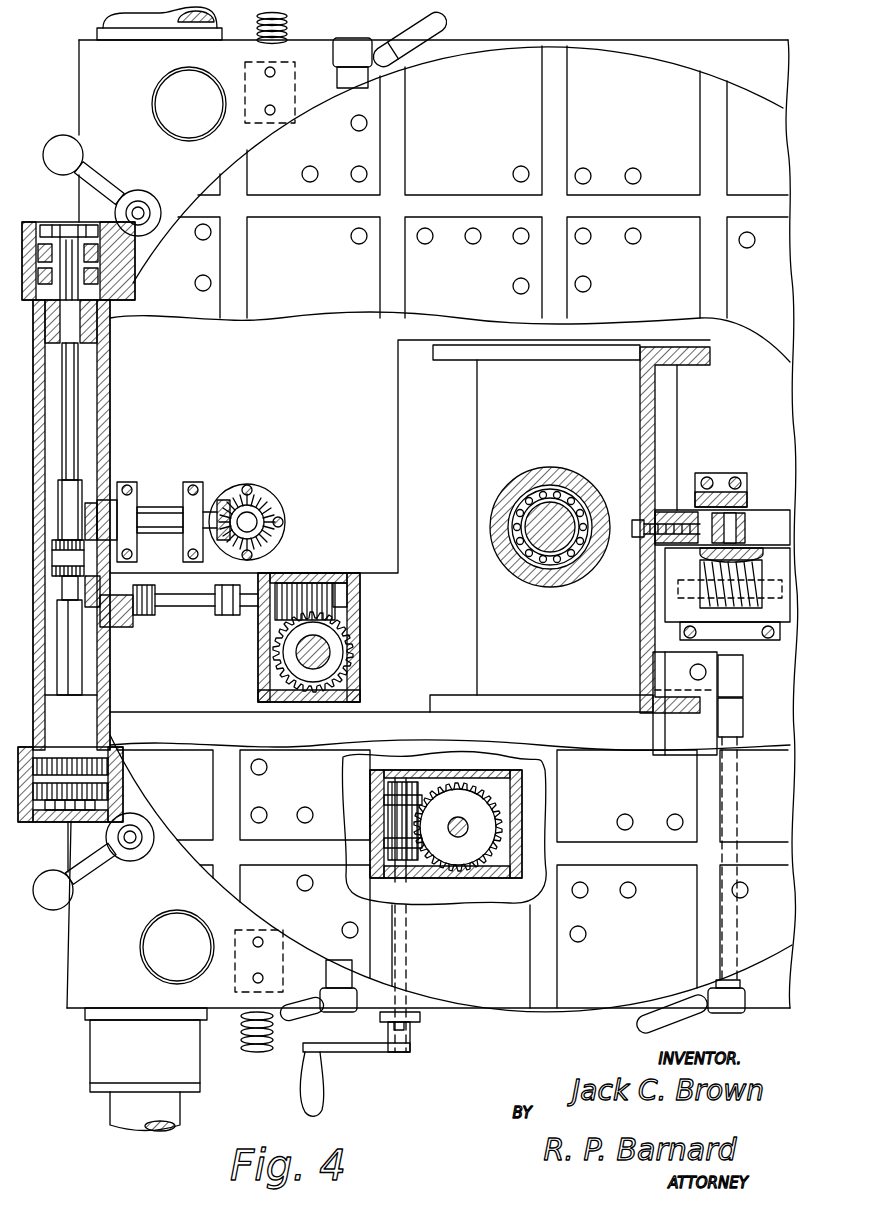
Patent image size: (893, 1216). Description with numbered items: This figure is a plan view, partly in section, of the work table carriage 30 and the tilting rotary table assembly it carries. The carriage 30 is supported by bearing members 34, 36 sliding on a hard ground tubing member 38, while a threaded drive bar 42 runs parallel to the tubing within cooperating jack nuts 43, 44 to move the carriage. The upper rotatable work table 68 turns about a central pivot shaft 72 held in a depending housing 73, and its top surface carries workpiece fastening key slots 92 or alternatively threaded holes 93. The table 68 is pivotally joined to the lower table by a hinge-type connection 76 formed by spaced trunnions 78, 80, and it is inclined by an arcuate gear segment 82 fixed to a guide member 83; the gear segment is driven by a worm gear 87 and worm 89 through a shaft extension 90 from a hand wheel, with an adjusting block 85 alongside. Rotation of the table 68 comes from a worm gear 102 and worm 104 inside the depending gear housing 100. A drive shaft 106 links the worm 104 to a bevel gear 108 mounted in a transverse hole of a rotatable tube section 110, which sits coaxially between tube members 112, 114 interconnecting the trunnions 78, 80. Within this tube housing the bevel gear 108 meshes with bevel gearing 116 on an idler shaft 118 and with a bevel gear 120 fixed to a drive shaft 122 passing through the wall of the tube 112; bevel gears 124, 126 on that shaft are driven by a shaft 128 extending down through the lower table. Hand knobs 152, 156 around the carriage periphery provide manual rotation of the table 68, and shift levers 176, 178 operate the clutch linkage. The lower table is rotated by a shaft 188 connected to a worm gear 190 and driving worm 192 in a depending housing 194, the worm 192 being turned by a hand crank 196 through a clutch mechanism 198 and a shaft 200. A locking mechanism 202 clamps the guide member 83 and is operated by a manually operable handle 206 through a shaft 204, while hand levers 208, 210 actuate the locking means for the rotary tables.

The work table carriage 30 is at (733, 62).
The bearing member 34 is at (102, 1030).
The bearing member 36 is at (105, 24).
The hard ground tubing member 38 is at (214, 14).
The threaded drive bar 42 is at (290, 22).
The jack nut 43 is at (246, 86).
The jack nut 44 is at (234, 958).
The upper rotatable work table 68 is at (582, 64).
The central pivot shaft 72 is at (526, 527).
The depending housing 73 is at (540, 482).
The hinge-type connection 76 is at (32, 735).
The trunnion 78 is at (70, 246).
The trunnion 80 is at (66, 802).
The arcuate gear segment 82 is at (688, 506).
The guide member 83 is at (484, 640).
The adjusting screw block 85 is at (748, 532).
The worm gear 87 is at (755, 588).
The worm 89 is at (708, 588).
The shaft extension 90 is at (756, 638).
The key slots 92 is at (598, 220).
The threaded holes 93 is at (633, 175).
The depending gear housing 100 is at (350, 672).
The worm gear 102 is at (278, 660).
The worm 104 is at (320, 580).
The drive shaft 106 is at (228, 612).
The bevel gear 108 is at (146, 605).
The rotatable tube section 110 is at (40, 606).
The tube member 112 is at (108, 400).
The tube member 114 is at (104, 678).
The bevel gearing 116 is at (52, 556).
The idler shaft 118 is at (76, 446).
The bevel gear 120 is at (136, 512).
The drive shaft 122 is at (158, 528).
The bevel gear 124 is at (243, 505).
The bevel gear 126 is at (276, 511).
The shaft 128 is at (272, 536).
The hand knob 152 is at (180, 126).
The hand knob 156 is at (160, 946).
The shift lever 176 is at (104, 182).
The shift lever 178 is at (92, 860).
The shaft 188 is at (456, 837).
The worm gear 190 is at (468, 762).
The driving worm 192 is at (372, 812).
The depending housing 194 is at (458, 847).
The hand crank 196 is at (320, 1078).
The clutch mechanism 198 is at (410, 1035).
The shaft 200 is at (408, 984).
The locking mechanism 202 is at (688, 748).
The shaft 204 is at (722, 902).
The manually operable handle 206 is at (642, 1025).
The hand lever 208 is at (422, 38).
The hand lever 210 is at (298, 1014).